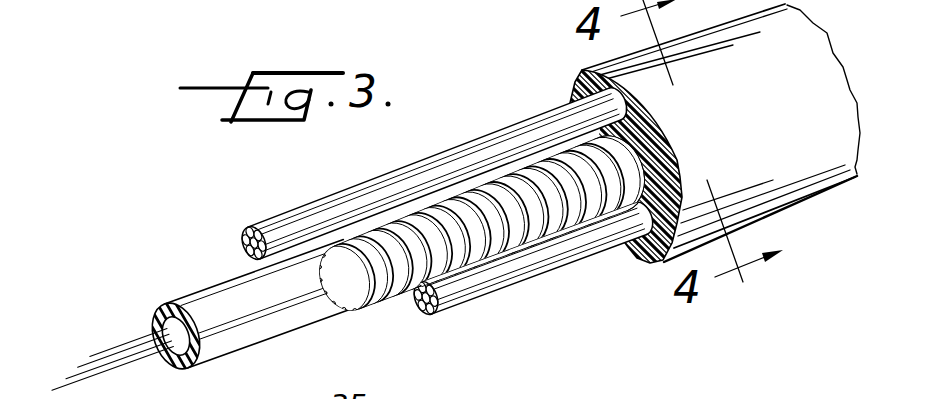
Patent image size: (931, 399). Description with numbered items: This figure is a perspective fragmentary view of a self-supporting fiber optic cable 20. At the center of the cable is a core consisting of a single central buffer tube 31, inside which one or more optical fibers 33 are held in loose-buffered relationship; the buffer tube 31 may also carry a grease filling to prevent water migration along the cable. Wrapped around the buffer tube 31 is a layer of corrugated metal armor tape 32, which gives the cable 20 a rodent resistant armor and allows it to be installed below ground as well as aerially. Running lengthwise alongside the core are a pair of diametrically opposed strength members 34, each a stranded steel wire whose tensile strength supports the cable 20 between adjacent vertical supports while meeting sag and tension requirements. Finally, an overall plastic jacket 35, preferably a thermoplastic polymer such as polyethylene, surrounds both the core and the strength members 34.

The fiber optic cable 20 is at (567, 288).
The central buffer tube 31 is at (200, 300).
The corrugated metal armor tape 32 is at (365, 232).
The optical fibers 33 is at (104, 358).
The strength members 34 is at (480, 139).
The plastic jacket 35 is at (577, 82).